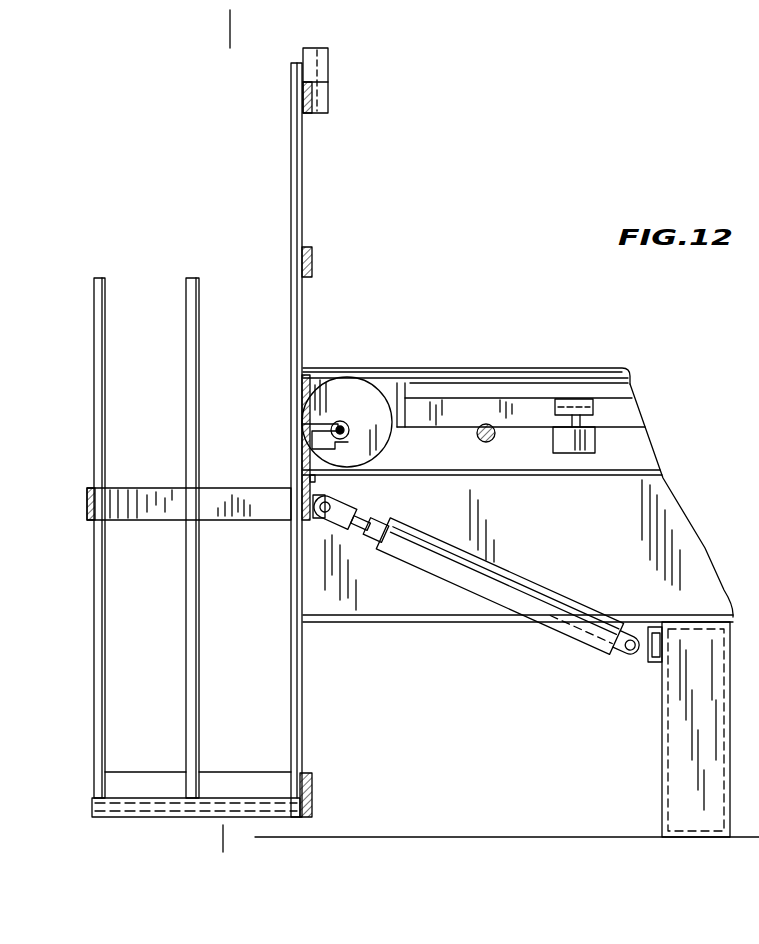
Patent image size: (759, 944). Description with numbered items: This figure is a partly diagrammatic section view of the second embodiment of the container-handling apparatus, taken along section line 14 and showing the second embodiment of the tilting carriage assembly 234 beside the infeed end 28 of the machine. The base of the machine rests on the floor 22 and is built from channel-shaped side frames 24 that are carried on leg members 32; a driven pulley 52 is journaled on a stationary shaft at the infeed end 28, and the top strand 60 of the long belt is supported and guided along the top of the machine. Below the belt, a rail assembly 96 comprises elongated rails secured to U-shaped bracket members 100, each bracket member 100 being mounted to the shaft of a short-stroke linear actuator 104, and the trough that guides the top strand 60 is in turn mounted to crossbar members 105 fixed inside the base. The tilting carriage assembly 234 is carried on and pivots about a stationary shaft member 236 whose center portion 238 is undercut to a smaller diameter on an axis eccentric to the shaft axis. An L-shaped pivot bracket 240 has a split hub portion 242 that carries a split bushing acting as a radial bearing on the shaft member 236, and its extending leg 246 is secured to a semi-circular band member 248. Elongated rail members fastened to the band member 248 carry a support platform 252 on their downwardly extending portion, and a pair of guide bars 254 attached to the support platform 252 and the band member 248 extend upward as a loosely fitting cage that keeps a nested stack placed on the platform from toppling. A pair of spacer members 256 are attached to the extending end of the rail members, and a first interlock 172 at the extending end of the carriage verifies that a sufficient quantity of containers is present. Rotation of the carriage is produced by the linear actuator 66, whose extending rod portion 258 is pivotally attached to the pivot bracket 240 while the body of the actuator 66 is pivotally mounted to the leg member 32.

The section line 14 is at (222, 25).
The floor 22 is at (528, 836).
The side frames 24 is at (483, 622).
The infeed end 28 is at (563, 166).
The leg members 32 is at (662, 762).
The driven pulleys 52 is at (316, 392).
The top strand 60 is at (556, 372).
The linear actuator 66 is at (593, 558).
The rail assembly 96 is at (646, 386).
The bracket members 100 is at (594, 408).
The linear actuators 104 is at (600, 452).
The crossbar members 105 is at (496, 437).
The first interlock 172 is at (328, 52).
The tilting carriage assembly 234 is at (233, 415).
The stationary shaft member 236 is at (375, 417).
The undercut center portion 238 is at (381, 451).
The pivot bracket 240 is at (317, 423).
The split hub portion 242 is at (347, 419).
The extending leg 246 is at (310, 478).
The semi-circular band member 248 is at (152, 488).
The support platform 252 is at (257, 800).
The guide bars 254 is at (110, 278).
The spacer members 256 is at (311, 113).
The extending rod portion 258 is at (353, 527).